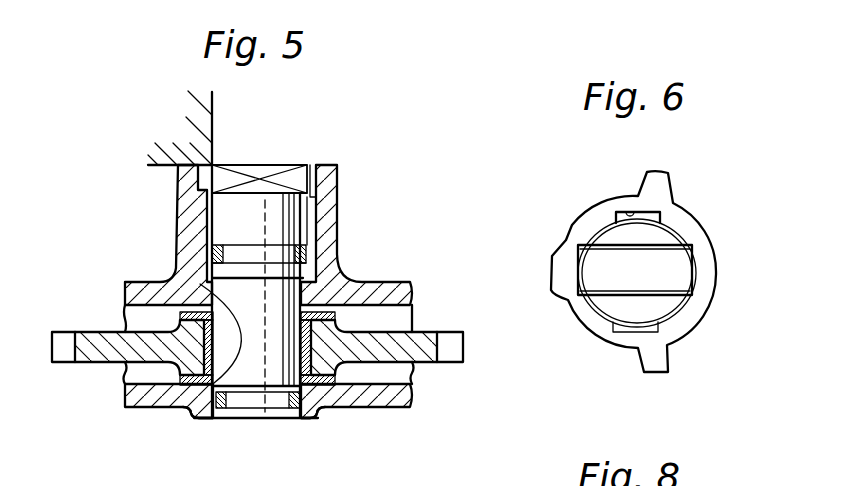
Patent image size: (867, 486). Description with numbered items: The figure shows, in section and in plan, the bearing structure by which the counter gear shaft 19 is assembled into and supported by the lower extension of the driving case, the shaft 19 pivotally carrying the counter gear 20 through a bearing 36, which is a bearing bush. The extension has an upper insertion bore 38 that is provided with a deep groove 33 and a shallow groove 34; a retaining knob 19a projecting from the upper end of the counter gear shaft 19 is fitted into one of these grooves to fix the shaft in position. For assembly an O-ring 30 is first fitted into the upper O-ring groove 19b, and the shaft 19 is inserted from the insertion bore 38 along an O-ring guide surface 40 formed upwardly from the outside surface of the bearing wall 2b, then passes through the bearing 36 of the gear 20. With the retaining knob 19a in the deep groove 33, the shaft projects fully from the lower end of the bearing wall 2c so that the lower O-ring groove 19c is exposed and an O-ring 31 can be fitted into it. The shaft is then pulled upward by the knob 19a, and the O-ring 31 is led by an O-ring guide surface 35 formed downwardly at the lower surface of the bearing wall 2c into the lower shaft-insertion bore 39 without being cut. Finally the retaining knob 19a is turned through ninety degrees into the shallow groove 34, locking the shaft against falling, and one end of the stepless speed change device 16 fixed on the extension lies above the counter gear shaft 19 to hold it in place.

In FIG. 5, the stepless speed change device 16 is at (205, 131).
In FIG. 5, the counter gear shaft 19 is at (270, 352).
In FIG. 5, the retaining knob 19a is at (266, 169).
In FIG. 6, the retaining knob 19a is at (660, 286).
In FIG. 5, the upper O-ring groove 19b is at (253, 252).
In FIG. 5, the lower O-ring groove 19c is at (270, 407).
In FIG. 5, the counter gear 20 is at (95, 332).
In FIG. 5, the bearing wall 2b is at (413, 290).
In FIG. 5, the bearing wall 2c is at (393, 400).
In FIG. 5, the O-ring 30 is at (305, 253).
In FIG. 5, the O-ring 31 is at (312, 420).
In FIG. 6, the deep groove 33 is at (629, 212).
In FIG. 5, the shallow groove 34 is at (202, 181).
In FIG. 5, the O-ring guide surface 35 is at (213, 420).
In FIG. 5, the bearing 36 is at (310, 348).
In FIG. 5, the insertion bore 38 is at (205, 236).
In FIG. 5, the lower shaft-insertion bore 39 is at (200, 284).
In FIG. 6, the O-ring guide surface 40 is at (677, 233).